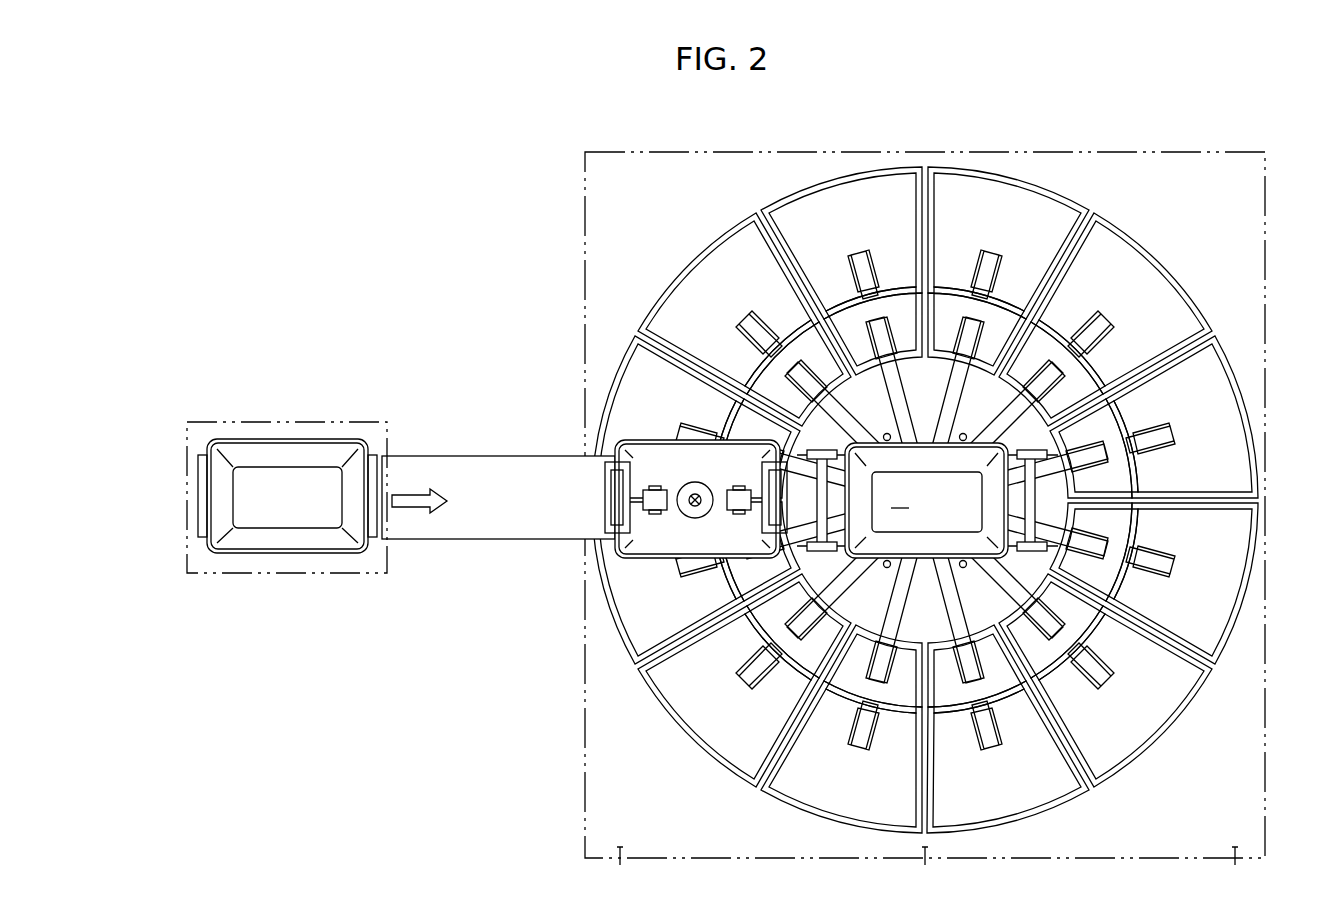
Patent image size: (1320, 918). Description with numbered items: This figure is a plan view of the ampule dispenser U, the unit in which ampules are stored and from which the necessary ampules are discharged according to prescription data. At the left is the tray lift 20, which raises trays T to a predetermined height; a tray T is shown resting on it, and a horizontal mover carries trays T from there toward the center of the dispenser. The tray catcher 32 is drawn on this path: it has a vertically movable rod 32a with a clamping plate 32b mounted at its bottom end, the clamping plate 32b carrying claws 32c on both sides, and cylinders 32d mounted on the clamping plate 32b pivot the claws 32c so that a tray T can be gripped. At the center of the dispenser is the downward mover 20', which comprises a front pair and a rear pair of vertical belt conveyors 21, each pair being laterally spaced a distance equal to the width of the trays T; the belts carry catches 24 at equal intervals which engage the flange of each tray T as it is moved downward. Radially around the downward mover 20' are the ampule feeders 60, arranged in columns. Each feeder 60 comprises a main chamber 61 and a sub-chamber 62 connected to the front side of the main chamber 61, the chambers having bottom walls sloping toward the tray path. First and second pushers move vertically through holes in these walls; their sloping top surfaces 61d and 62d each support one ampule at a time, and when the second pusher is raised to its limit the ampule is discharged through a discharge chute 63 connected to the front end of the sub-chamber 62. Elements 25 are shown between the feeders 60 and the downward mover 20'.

The ampule dispenser U is at (600, 150).
The tray lift 20 is at (287, 459).
The downward mover 20' is at (858, 552).
The tray T is at (333, 556).
The vertical belt conveyor 21 is at (812, 452).
The catch 24 is at (800, 560).
The transfer arm 25 is at (858, 702).
The tray catcher 32 is at (656, 498).
The vertically movable rod 32a is at (686, 510).
The clamping plate 32b is at (677, 467).
The claw 32c is at (606, 505).
The cylinder 32d is at (605, 490).
The ampule feeder 60 is at (1210, 367).
The main chamber 61 is at (1208, 636).
The top surface of first pusher 61d is at (1153, 548).
The sub-chamber 62 is at (1113, 560).
The top surface of second pusher 62d is at (1090, 537).
The discharge chute 63 is at (1067, 620).